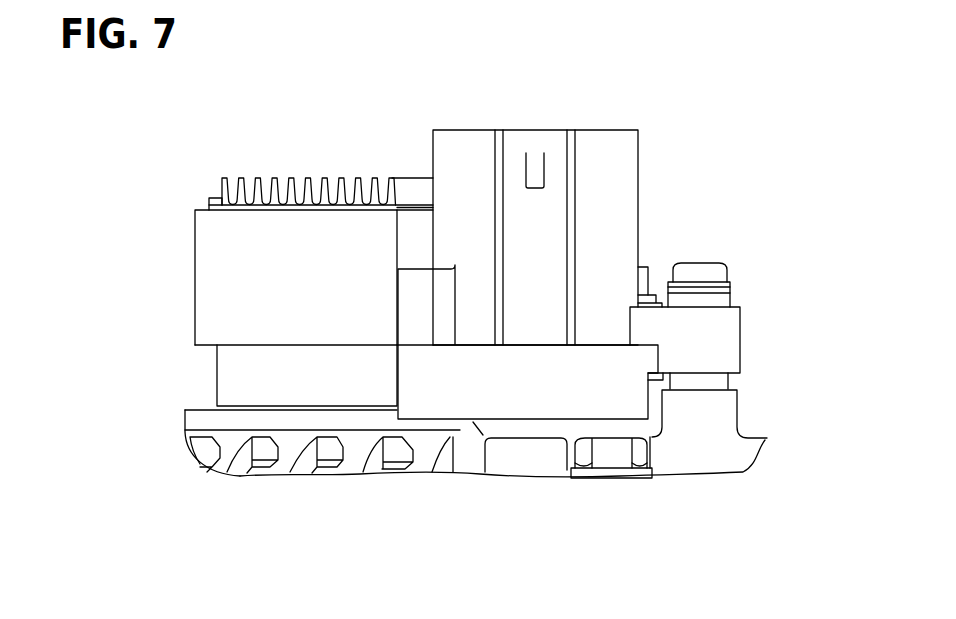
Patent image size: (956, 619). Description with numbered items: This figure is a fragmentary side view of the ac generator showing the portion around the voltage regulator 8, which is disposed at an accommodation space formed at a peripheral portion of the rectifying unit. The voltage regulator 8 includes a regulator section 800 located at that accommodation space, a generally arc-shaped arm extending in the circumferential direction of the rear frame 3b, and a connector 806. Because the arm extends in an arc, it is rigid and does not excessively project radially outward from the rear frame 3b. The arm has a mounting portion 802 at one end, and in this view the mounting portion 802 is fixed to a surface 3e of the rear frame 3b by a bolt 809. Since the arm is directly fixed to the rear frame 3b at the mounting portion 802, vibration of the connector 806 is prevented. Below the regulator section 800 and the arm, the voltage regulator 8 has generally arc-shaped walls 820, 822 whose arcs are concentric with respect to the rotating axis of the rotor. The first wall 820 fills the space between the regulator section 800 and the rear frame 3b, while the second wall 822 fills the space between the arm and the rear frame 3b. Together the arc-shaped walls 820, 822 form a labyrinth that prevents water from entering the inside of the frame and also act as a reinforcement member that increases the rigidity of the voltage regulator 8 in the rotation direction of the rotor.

The voltage regulator 8 is at (352, 104).
The regulator section 800 is at (273, 245).
The connector 806 is at (536, 150).
The bolt 809 is at (702, 272).
The mounting portion 802 is at (728, 347).
The first wall 820 is at (288, 393).
The second wall 822 is at (522, 398).
The surface of the rear frame 3e is at (737, 389).
The rear frame 3b is at (698, 457).